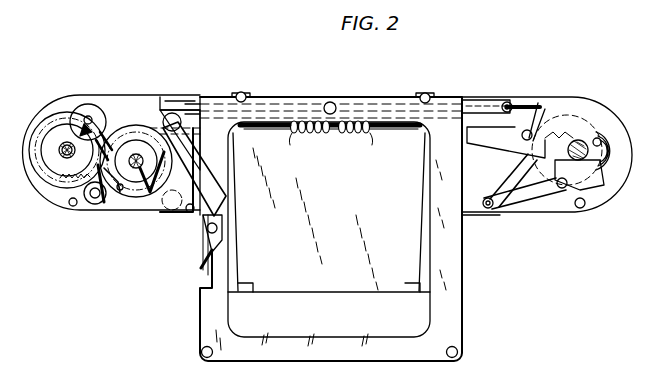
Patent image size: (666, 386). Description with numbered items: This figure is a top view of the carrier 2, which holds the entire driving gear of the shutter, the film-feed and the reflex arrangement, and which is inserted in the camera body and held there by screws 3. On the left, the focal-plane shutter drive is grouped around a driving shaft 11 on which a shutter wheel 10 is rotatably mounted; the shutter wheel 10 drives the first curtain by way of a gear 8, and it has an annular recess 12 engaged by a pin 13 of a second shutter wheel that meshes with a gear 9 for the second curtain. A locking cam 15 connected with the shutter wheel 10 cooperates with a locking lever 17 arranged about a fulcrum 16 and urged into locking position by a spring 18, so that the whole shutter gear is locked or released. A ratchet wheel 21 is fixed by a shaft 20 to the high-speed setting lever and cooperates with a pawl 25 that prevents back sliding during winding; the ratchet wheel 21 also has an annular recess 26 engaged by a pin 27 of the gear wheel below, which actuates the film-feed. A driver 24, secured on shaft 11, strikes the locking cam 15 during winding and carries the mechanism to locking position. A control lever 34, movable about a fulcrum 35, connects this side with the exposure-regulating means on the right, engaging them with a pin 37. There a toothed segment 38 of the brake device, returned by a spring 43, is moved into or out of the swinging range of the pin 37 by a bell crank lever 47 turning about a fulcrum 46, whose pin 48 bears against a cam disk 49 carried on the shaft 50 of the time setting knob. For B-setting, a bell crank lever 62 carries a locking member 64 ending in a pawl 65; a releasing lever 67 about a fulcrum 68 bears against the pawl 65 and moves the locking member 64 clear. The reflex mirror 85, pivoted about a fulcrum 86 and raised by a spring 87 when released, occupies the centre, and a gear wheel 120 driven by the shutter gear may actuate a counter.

The carrier 2 is at (440, 296).
The screws 3 is at (243, 93).
The gear 8 is at (170, 135).
The gear 9 is at (166, 194).
The shutter wheel 10 is at (130, 118).
The driving shaft 11 is at (136, 168).
The annular recess 12 is at (103, 196).
The pin 13 is at (108, 190).
The locking cam 15 is at (167, 120).
The fulcrum 16 is at (210, 227).
The locking lever 17 is at (202, 187).
The spring 18 is at (200, 266).
The shaft 20 is at (63, 142).
The ratchet wheel 21 is at (50, 175).
The driver 24 is at (148, 188).
The pawl 25 is at (94, 204).
The annular recess 26 is at (107, 122).
The pin 27 is at (85, 118).
The control lever 34 is at (475, 103).
The fulcrum 35 is at (333, 104).
The pin 37 is at (505, 103).
The toothed segment 38 is at (510, 126).
The spring 43 is at (610, 138).
The fulcrum 46 is at (489, 208).
The bell crank lever 47 is at (498, 193).
The pin 48 is at (560, 188).
The cam disk 49 is at (590, 172).
The shaft 50 is at (579, 146).
The bell crank lever 62 is at (533, 125).
The locking member 64 is at (534, 103).
The pawl 65 is at (190, 118).
The releasing lever 67 is at (172, 117).
The fulcrum 68 is at (208, 230).
The mirror 85 is at (403, 253).
The fulcrum 86 is at (385, 127).
The spring 87 is at (350, 127).
The gear wheel 120 is at (92, 112).